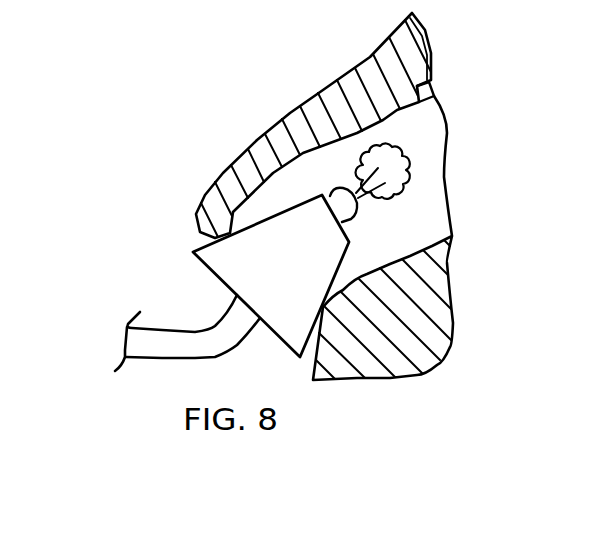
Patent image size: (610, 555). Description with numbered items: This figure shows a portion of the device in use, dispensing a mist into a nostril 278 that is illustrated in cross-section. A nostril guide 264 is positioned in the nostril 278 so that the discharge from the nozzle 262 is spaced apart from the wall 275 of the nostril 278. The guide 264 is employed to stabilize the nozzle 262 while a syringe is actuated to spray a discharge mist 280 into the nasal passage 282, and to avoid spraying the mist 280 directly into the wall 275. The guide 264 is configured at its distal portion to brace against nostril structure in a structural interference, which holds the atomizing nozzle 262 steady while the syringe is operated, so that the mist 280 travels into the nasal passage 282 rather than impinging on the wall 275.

The nostril 278 is at (242, 98).
The wall 275 is at (438, 95).
The nasal passage 282 is at (427, 123).
The discharge mist 280 is at (408, 179).
The nozzle 262 is at (352, 213).
The guide 264 is at (213, 258).